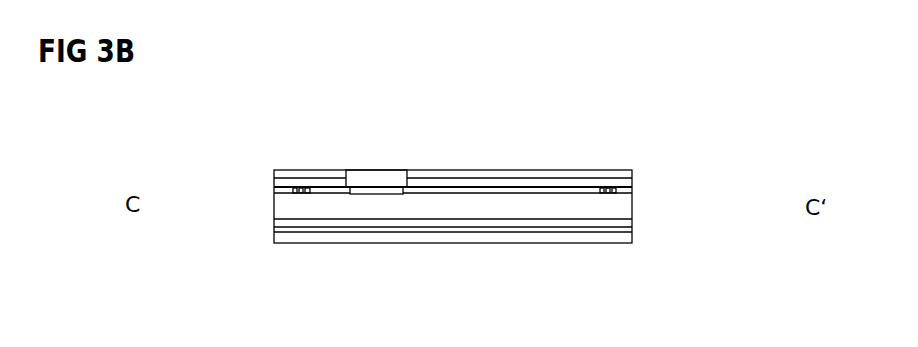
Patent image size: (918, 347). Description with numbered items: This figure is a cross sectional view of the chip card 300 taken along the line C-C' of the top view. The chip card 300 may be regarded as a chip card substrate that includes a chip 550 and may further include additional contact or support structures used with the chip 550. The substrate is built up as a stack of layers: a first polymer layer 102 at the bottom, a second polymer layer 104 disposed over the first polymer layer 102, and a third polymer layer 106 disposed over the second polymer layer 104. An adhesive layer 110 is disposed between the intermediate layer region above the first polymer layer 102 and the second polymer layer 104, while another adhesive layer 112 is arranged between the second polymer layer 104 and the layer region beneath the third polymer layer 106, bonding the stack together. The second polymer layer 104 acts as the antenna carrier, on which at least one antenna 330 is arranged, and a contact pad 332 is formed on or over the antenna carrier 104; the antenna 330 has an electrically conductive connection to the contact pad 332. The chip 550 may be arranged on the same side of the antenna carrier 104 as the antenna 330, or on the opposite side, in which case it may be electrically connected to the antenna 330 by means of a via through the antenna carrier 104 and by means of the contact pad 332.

The chip card 300 is at (767, 116).
The third polymer layer 106 is at (623, 177).
The another adhesive layer 112 is at (530, 187).
The chip 550 is at (370, 183).
The contact pad 332 is at (370, 192).
The antenna 330 is at (330, 192).
The second polymer layer 104 is at (272, 187).
The adhesive layer 110 is at (622, 227).
The first polymer layer 102 is at (622, 232).